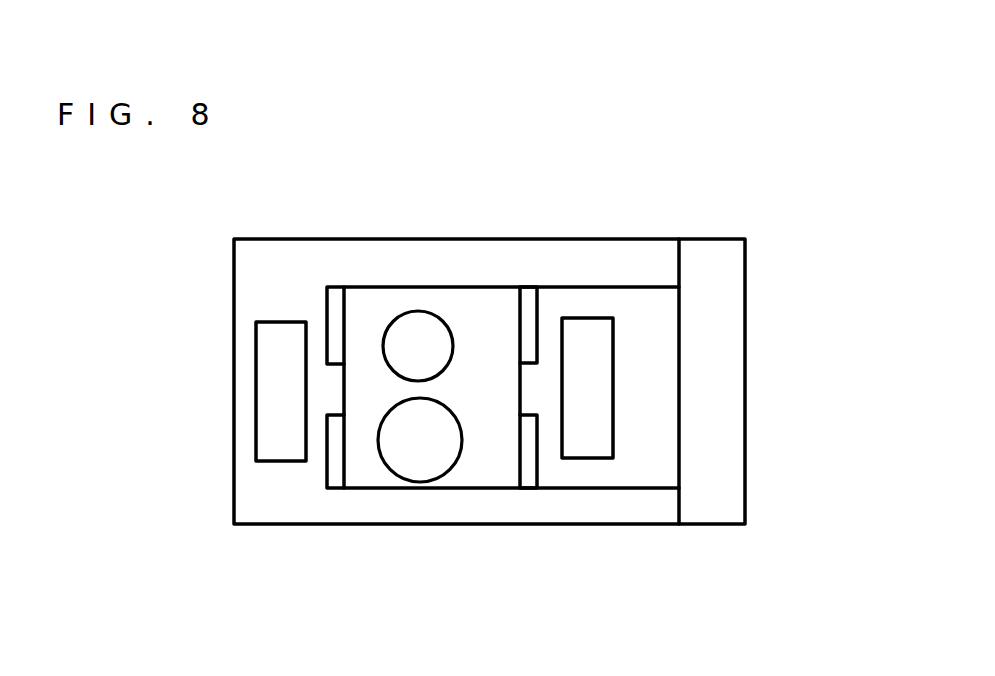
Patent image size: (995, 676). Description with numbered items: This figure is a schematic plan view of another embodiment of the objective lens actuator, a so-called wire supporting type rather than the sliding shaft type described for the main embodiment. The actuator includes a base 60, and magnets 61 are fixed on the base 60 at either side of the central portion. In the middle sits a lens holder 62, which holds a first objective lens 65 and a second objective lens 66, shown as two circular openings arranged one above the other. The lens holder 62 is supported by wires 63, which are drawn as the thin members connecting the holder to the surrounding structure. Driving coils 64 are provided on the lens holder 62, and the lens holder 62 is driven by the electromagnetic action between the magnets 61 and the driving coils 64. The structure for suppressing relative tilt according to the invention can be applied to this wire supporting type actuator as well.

The base 60 is at (751, 415).
The magnets 61 is at (282, 403).
The lens holder 62 is at (458, 326).
The wires 63 is at (605, 287).
The driving coils 64 is at (335, 480).
The first objective lens 65 is at (410, 327).
The second objective lens 66 is at (438, 458).